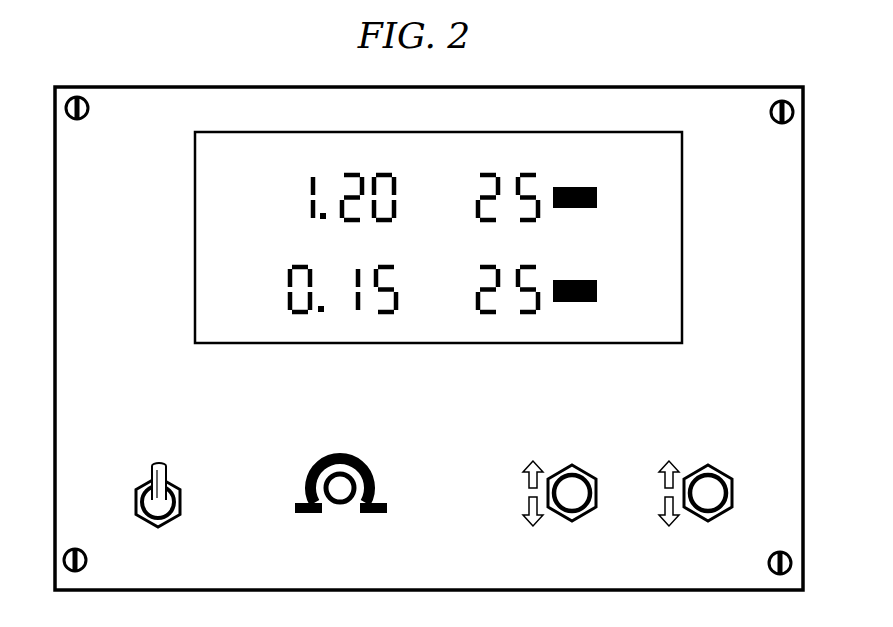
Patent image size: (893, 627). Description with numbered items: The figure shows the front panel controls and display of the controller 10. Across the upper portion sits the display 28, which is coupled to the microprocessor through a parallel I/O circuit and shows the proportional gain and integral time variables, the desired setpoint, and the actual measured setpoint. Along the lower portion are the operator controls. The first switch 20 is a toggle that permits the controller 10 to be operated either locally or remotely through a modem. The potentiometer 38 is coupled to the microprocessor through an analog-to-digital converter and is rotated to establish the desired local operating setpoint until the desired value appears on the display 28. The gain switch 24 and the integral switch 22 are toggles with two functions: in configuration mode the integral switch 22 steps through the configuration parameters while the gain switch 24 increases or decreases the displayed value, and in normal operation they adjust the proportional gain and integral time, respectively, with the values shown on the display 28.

The controller 10 is at (118, 158).
The display 28 is at (637, 173).
The first switch 20 is at (134, 500).
The potentiometer 38 is at (341, 487).
The gain switch 24 is at (586, 474).
The integral switch 22 is at (722, 474).